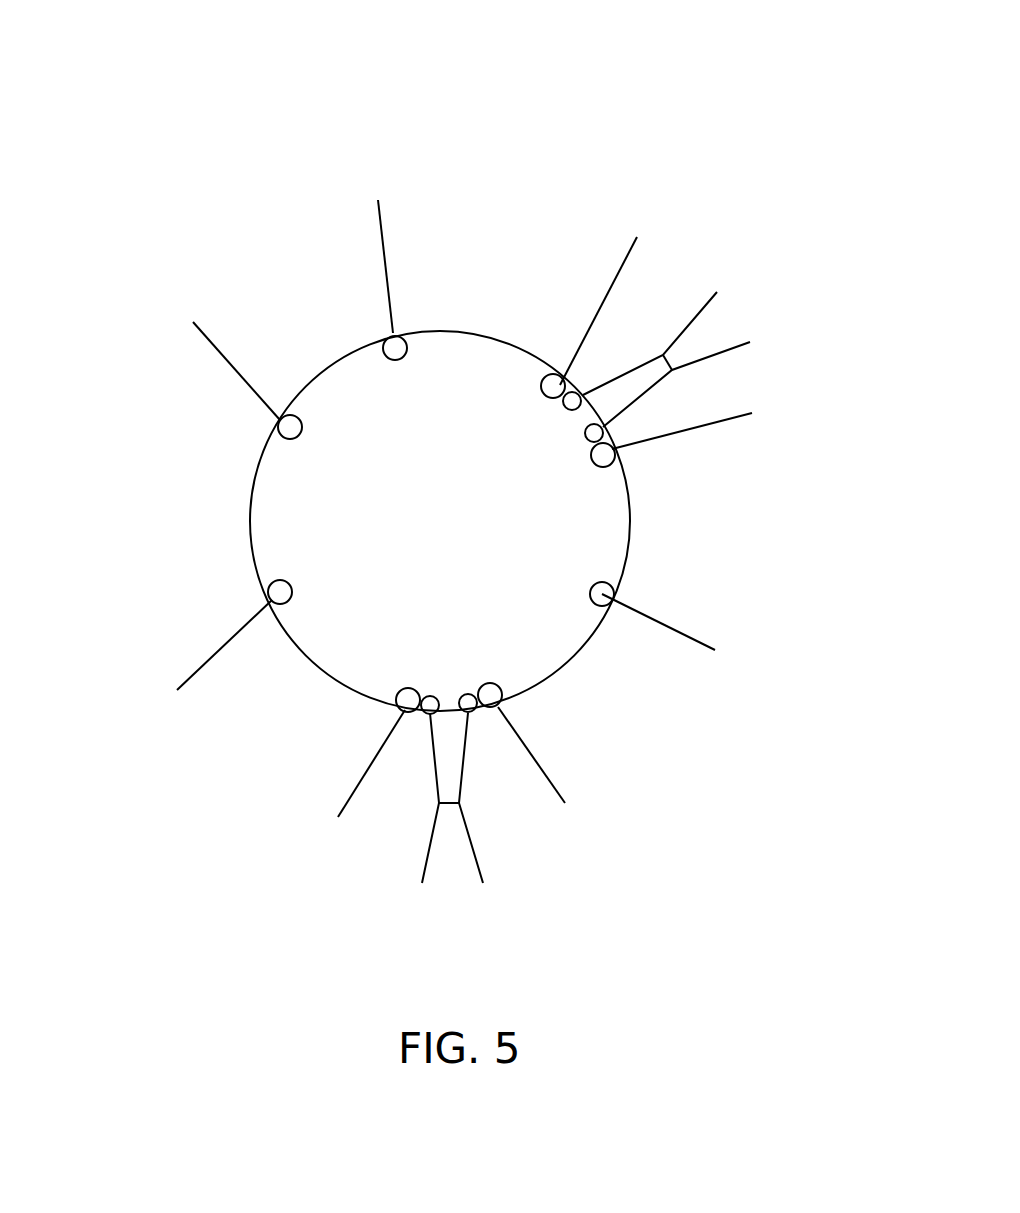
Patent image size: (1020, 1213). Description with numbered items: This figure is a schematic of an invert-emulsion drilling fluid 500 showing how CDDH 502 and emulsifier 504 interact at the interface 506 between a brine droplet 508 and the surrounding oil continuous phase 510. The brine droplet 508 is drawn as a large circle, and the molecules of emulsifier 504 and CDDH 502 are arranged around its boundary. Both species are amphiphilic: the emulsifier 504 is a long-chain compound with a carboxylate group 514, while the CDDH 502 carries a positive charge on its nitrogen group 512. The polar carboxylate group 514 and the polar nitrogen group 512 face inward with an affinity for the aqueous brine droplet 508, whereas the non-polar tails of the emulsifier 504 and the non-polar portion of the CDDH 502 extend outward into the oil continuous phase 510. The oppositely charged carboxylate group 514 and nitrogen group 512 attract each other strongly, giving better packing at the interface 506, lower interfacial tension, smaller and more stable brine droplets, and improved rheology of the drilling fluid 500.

The invert-emulsion drilling fluid 500 is at (742, 94).
The CDDH 502 is at (698, 308).
The emulsifier 504 is at (388, 287).
The interface 506 is at (252, 505).
The brine droplet 508 is at (464, 536).
The oil continuous phase 510 is at (157, 260).
The nitrogen group 512 is at (585, 435).
The carboxylate group 514 is at (300, 433).